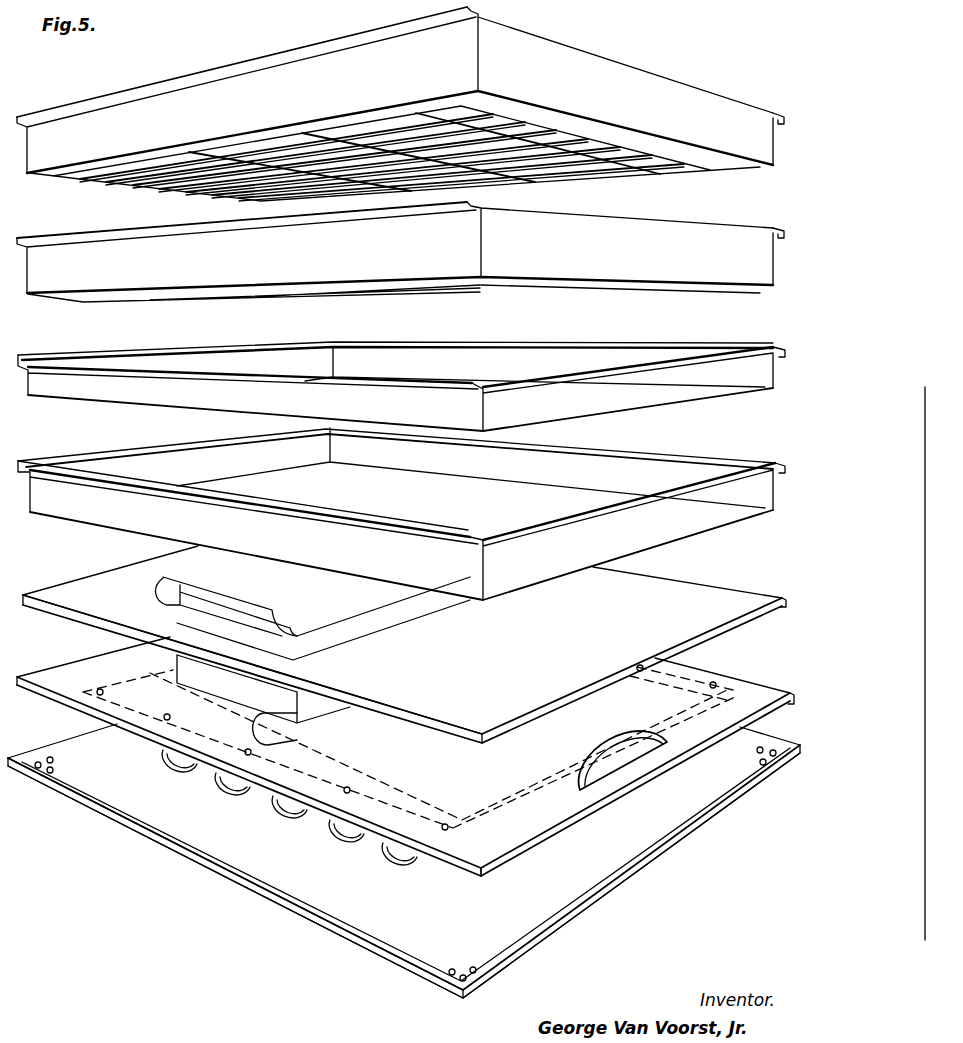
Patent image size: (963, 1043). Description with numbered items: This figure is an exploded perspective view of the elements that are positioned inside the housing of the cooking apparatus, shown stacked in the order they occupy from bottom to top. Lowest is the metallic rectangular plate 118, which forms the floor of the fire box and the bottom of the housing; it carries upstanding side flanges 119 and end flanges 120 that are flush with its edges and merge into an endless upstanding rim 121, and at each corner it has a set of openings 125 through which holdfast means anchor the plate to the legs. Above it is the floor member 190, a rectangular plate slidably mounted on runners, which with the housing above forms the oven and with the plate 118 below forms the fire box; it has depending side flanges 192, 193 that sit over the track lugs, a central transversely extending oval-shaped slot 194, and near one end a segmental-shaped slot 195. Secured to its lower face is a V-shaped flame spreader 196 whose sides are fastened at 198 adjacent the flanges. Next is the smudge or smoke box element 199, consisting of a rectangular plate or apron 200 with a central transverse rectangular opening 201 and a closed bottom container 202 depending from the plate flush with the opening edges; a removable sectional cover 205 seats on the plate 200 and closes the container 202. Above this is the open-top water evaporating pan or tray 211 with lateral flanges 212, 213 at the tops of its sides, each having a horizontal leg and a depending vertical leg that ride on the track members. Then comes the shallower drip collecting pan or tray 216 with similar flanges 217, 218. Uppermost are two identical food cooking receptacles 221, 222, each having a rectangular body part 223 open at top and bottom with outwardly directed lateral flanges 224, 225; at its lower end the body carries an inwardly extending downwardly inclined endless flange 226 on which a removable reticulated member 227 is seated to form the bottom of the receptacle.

The rectangular plate 118 is at (641, 887).
The side flanges 119 is at (315, 921).
The end flanges 120 is at (655, 852).
The endless upstanding rim 121 is at (205, 861).
The openings 125 is at (50, 773).
The floor member 190 is at (570, 805).
The depending flange 192 is at (482, 873).
The depending flange 193 is at (791, 694).
The oval-shaped slot 194 is at (290, 728).
The segmental-shaped slot 195 is at (616, 738).
The V-shaped flame spreader 196 is at (643, 756).
The securing points of spreader sides 198 is at (714, 684).
The smudge or smoke box element 199 is at (728, 604).
The rectangular plate or apron 200 is at (698, 595).
The rectangular opening 201 is at (363, 627).
The closed bottom container 202 is at (220, 680).
The removable cover or lid 205 is at (241, 603).
The water evaporating pan or tray 211 is at (672, 527).
The lateral flange 212 is at (402, 520).
The lateral flange 213 is at (660, 452).
The drip collecting pan or tray 216 is at (401, 389).
The lateral flange 217 is at (405, 378).
The lateral flange 218 is at (511, 346).
The food cooking receptacle, pan or tray 221 is at (663, 250).
The food cooking receptacle, pan or tray 222 is at (672, 103).
The rectangular body part 223 is at (560, 55).
The lateral flange 224 is at (296, 52).
The lateral flange 225 is at (774, 112).
The inwardly extending downwardly inclined endless flange 226 is at (545, 118).
The reticulated member 227 is at (215, 178).